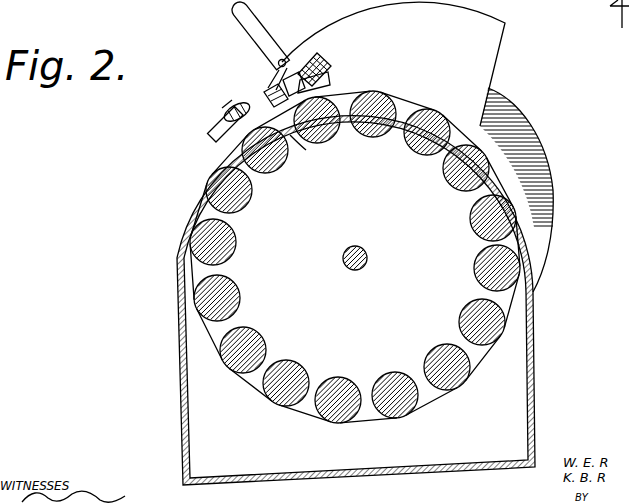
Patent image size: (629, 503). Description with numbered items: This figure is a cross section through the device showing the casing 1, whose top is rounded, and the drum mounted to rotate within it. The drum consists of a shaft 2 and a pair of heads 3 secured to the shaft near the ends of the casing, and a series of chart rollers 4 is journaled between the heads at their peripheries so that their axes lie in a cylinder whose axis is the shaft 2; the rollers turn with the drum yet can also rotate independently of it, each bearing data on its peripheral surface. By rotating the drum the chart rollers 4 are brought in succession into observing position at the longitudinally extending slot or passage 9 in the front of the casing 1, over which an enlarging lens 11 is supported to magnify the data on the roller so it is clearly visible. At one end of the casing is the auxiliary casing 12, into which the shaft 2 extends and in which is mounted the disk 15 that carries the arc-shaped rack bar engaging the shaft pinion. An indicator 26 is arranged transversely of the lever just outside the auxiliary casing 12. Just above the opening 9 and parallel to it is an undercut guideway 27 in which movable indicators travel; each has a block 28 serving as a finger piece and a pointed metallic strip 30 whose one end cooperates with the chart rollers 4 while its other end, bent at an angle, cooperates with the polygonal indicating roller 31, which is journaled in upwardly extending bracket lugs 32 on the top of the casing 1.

The casing 1 is at (536, 333).
The shaft 2 is at (368, 259).
The heads 3 is at (430, 397).
The chart rollers 4 is at (240, 293).
The slot or passage 9 is at (222, 118).
The enlarging lens 11 is at (225, 104).
The auxiliary casing 12 is at (488, 43).
The disk 15 is at (553, 212).
The indicator 26 is at (248, 11).
The undercut guideway 27 is at (308, 152).
The block 28 is at (263, 91).
The metallic strip 30 is at (284, 64).
The indicating roller 31 is at (313, 60).
The bracket lugs 32 is at (330, 73).